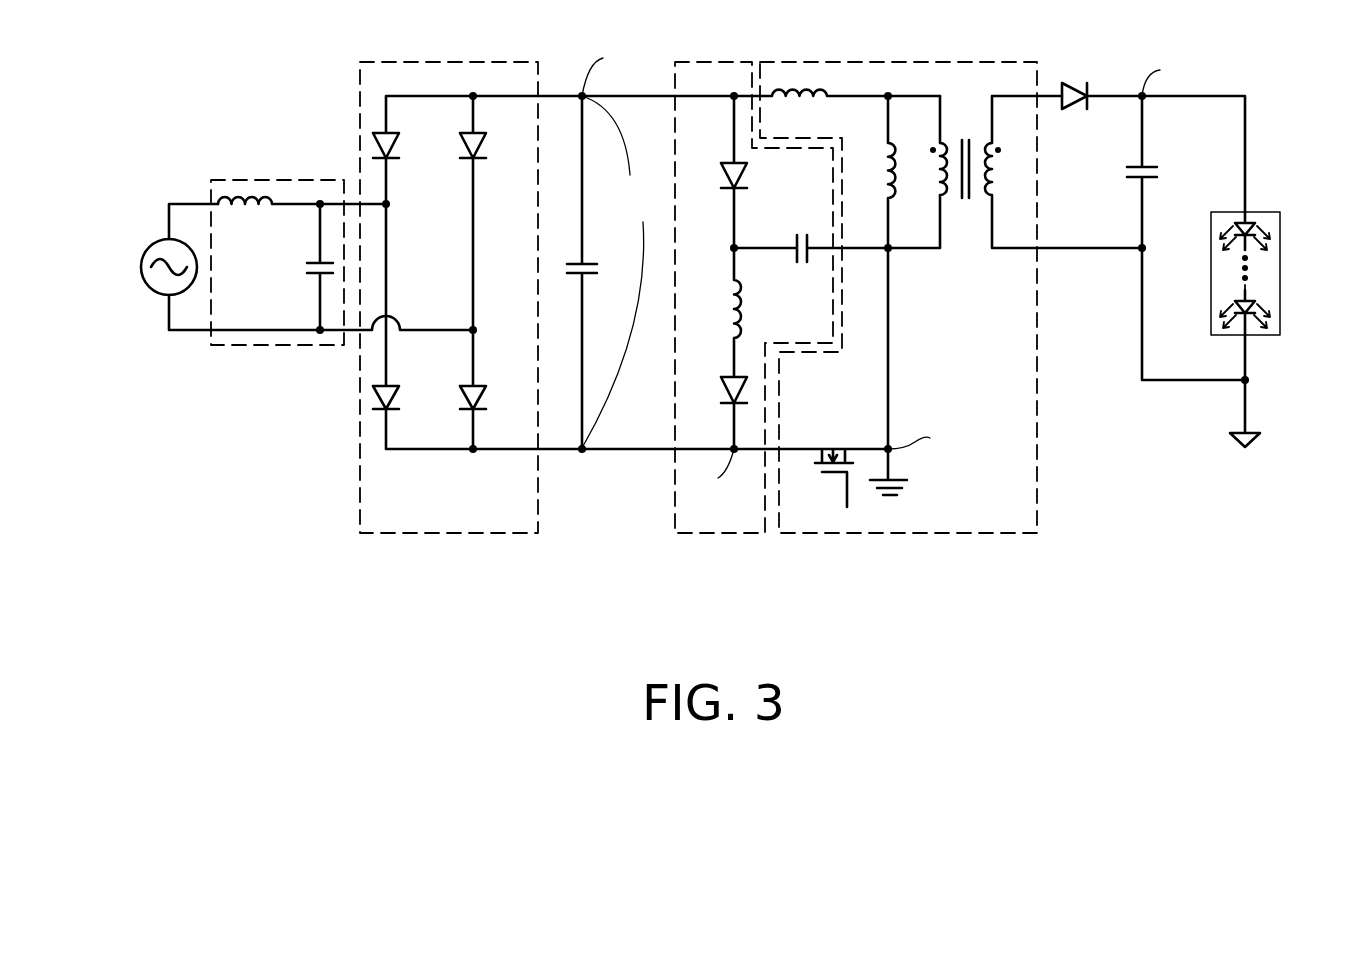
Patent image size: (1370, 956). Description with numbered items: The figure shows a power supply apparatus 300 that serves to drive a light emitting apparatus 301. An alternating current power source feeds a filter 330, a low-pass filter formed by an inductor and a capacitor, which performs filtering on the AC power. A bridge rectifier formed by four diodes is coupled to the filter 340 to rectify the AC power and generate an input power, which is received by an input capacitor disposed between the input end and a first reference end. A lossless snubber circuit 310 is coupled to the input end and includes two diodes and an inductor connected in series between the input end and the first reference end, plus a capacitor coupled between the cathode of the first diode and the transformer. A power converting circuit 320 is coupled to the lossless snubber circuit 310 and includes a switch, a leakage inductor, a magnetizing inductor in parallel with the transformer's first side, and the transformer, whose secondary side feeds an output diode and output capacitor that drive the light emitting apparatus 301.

The power supply apparatus 300 is at (718, 292).
The light emitting apparatus 301 is at (1270, 212).
The lossless snubber circuit 310 is at (720, 62).
The power converting circuit 320 is at (925, 62).
The filter 330 is at (278, 180).
The filter 340 is at (482, 62).